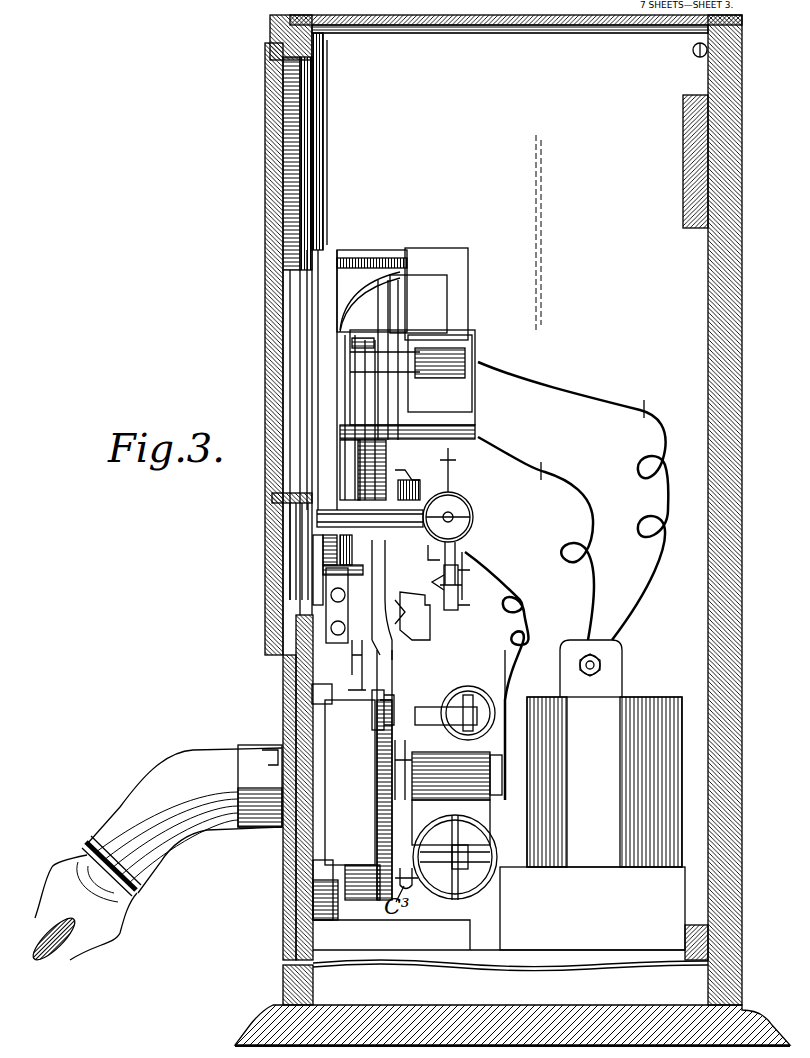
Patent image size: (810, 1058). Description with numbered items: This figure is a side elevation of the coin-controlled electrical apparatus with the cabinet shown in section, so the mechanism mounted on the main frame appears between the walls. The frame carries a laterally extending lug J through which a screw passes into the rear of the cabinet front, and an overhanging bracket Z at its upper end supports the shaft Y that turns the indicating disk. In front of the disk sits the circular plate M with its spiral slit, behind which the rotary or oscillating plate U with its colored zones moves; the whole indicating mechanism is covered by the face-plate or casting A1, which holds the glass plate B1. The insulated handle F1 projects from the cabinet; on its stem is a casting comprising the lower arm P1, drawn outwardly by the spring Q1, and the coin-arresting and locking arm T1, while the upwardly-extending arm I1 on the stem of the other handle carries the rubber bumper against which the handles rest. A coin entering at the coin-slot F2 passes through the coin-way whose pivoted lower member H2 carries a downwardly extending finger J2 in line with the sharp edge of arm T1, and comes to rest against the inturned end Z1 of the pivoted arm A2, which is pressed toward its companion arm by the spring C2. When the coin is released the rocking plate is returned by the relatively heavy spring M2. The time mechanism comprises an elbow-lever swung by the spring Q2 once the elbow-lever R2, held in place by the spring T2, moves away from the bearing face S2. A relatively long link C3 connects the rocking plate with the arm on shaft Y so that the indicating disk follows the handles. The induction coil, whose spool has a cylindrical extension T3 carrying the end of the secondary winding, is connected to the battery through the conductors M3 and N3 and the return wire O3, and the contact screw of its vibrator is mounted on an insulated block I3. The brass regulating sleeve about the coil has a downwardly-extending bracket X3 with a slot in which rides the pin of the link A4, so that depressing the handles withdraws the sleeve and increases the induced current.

The face-plate or casting A1 is at (268, 58).
The glass plate B1 is at (268, 100).
The circular plate M is at (296, 242).
The rotary or oscillating plate U is at (318, 255).
The shaft Y is at (340, 335).
The overhanging bracket Z is at (360, 260).
The link C3 is at (428, 290).
The conductor M3 is at (626, 395).
The spring Q2 is at (408, 440).
The conductor N3 is at (392, 468).
The bearing face S2 is at (422, 500).
The cylindrical extension of the coil spool T3 is at (458, 515).
The wire O3 is at (568, 498).
The coin-slot F2 is at (322, 552).
The pivoted lower member H2 is at (340, 588).
The block I3 is at (437, 548).
The upwardly-extending arm I1 is at (374, 580).
The bracket or plate X3 is at (462, 585).
The link A4 is at (520, 610).
The elbow-lever R2 is at (415, 610).
The coin-arresting and locking arm T1 is at (368, 668).
The spring C2 is at (400, 708).
The spring M2 is at (516, 640).
The inturned end Z1 is at (318, 692).
The pivoted arm A2 is at (386, 700).
The finger or arm J2 is at (350, 782).
The spring T2 is at (395, 742).
The lug J is at (318, 895).
The lower arm P1 is at (372, 900).
The spring Q1 is at (455, 898).
The handle F1 is at (88, 935).